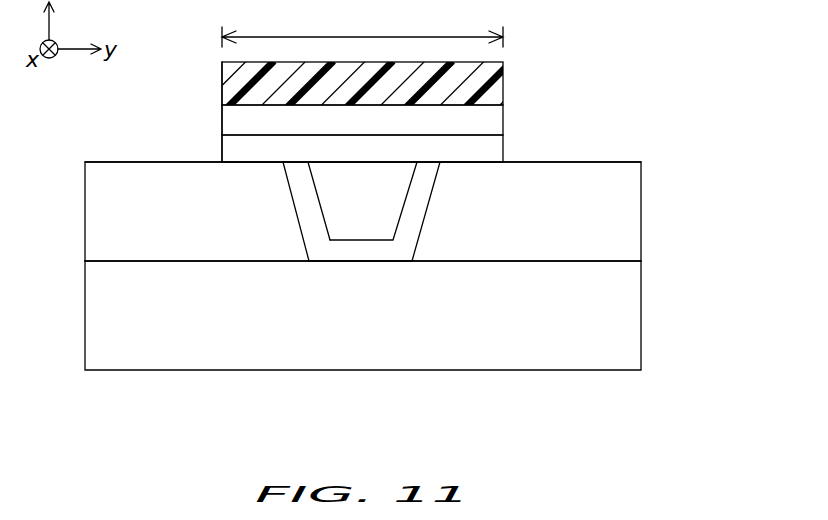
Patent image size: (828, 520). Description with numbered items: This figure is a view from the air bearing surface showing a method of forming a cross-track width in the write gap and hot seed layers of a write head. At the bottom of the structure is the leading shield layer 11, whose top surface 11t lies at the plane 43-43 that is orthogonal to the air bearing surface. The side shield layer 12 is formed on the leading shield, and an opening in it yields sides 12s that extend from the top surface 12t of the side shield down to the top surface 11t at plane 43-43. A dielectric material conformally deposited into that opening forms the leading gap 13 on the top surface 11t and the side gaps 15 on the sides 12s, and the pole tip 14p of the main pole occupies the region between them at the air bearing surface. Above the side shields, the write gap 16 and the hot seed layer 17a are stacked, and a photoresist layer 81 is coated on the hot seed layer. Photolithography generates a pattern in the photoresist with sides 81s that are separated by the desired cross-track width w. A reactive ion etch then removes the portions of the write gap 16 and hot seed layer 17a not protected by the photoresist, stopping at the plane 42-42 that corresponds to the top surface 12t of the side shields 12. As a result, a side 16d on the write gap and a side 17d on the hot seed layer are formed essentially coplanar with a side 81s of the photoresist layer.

The cross-track width w is at (362, 30).
The photoresist layer 81 is at (487, 87).
The side of photoresist layer 81s is at (222, 83).
The hot seed layer 17a is at (487, 118).
The side of hot seed layer 17d is at (222, 121).
The write gap 16 is at (487, 146).
The side of write gap 16d is at (222, 144).
The side shield layer 12 is at (105, 209).
The top surface of side shield layer 12t is at (117, 162).
The sides of side shield 12s is at (298, 223).
The leading shield layer 11 is at (620, 298).
The top surface of leading shield 11t is at (341, 261).
The plane 42- 42 is at (73, 163).
The plane 43- 43 is at (73, 261).
The side gap 15 is at (305, 182).
The pole tip 14p is at (337, 193).
The leading gap 13 is at (393, 250).